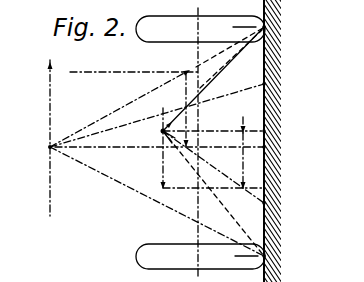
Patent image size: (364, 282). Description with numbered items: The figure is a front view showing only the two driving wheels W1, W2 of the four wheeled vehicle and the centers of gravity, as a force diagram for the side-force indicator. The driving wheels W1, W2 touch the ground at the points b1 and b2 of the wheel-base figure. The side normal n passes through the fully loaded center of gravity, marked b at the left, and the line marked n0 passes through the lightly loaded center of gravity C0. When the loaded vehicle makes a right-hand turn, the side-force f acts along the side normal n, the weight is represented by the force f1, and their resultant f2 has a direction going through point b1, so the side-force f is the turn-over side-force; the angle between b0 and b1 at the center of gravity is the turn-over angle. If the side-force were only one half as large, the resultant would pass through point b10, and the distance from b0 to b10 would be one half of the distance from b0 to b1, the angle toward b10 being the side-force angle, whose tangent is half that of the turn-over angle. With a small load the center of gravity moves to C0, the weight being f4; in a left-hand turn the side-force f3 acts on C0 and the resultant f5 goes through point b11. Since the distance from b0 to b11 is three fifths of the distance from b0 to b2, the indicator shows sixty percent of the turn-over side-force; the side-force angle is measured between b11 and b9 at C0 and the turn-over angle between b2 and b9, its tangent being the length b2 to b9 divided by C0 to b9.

The point b (object/source point) b is at (148, 142).
The wheel contact point b1 is at (265, 26).
The wheel contact point b2 is at (265, 256).
The reference point on ground line b9 is at (265, 132).
The half side-force resultant point b10 is at (265, 85).
The resultant point for left-hand turn b11 is at (265, 204).
The ground reference point b0 is at (265, 148).
The center of gravity of lightly loaded vehicle C0 is at (201, 141).
The side-force f is at (127, 71).
The weight of loaded vehicle f1 is at (190, 143).
The resultant force f2 is at (230, 142).
The side-force on lightly loaded vehicle f3 is at (157, 192).
The weight of lightly loaded vehicle f4 is at (241, 122).
The resultant force for lightly loaded vehicle f5 is at (252, 189).
The side normal n is at (48, 139).
The vertical line n0 is at (164, 140).
The driving wheel W1 is at (160, 44).
The driving wheel W2 is at (156, 268).